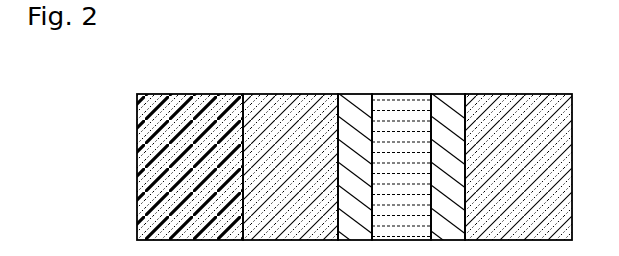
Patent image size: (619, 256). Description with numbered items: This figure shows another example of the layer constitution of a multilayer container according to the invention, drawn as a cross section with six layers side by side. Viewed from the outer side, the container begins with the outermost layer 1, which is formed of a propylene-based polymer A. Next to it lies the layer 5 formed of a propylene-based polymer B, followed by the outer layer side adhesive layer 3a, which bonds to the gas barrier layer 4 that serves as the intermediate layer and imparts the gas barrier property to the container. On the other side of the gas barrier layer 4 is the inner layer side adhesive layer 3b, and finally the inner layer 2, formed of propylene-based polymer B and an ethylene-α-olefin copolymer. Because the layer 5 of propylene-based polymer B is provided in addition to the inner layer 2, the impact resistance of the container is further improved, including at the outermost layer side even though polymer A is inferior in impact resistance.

The outermost layer 1 is at (193, 105).
The inner layer 2 is at (520, 106).
The outer layer side adhesive layer 3a is at (355, 106).
The inner layer side adhesive layer 3b is at (449, 106).
The gas barrier layer 4 is at (400, 106).
The layer formed of propylene-based polymer B 5 is at (291, 106).